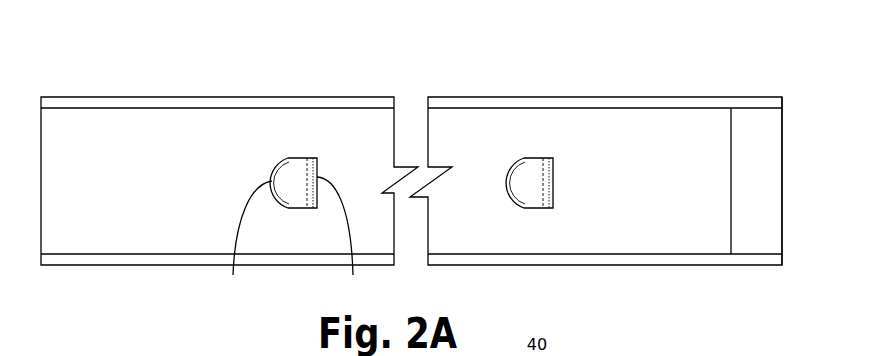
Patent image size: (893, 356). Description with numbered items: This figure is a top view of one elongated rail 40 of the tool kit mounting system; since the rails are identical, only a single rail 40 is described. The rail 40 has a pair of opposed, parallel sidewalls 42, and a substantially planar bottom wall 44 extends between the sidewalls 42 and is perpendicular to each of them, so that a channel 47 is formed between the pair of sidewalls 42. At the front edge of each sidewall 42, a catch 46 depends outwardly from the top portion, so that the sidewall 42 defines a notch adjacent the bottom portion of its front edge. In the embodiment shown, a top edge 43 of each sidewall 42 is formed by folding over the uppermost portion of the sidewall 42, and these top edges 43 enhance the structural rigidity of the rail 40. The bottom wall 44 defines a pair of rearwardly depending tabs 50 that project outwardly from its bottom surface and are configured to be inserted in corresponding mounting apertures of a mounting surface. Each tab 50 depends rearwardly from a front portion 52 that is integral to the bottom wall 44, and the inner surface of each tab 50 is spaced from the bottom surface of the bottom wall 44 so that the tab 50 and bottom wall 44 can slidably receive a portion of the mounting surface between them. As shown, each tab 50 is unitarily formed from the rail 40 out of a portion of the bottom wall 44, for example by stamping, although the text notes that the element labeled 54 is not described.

The rail 40 is at (414, 136).
The sidewall 42 is at (278, 97).
The top edge 43 is at (147, 107).
The bottom wall 44 is at (157, 197).
The catch 46 is at (760, 97).
The channel 47 is at (684, 184).
The tab 50 is at (530, 180).
The front portion 52 is at (316, 232).
The lead wire 54 is at (247, 244).